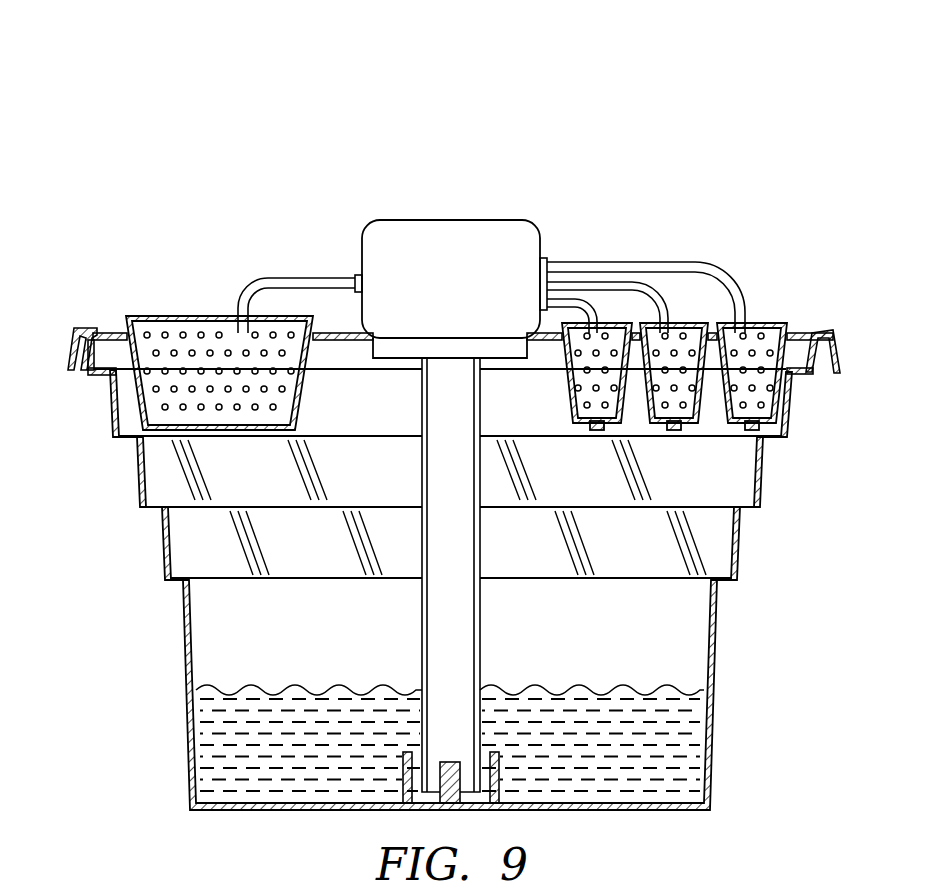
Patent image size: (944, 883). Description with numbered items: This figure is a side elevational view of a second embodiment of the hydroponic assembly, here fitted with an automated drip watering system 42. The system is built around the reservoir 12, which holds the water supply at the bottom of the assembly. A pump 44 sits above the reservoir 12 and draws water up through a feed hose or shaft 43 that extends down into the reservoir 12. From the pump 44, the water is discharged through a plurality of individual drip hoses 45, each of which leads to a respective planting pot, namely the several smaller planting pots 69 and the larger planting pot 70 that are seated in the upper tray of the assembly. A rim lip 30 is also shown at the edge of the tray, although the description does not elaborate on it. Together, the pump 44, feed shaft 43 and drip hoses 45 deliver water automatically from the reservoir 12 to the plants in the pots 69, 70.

The reservoir 12 is at (212, 629).
The rim lip 30 is at (83, 327).
The automated watering system 42 is at (257, 170).
The feed hose or shaft 43 is at (480, 627).
The pump 44 is at (440, 240).
The drip hoses 45 is at (288, 277).
The planting pots 69 is at (603, 320).
The planting pot 70 is at (150, 314).